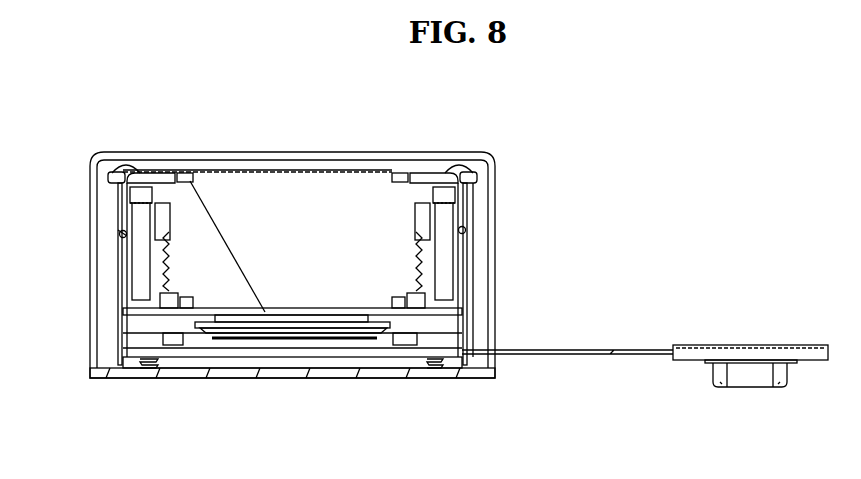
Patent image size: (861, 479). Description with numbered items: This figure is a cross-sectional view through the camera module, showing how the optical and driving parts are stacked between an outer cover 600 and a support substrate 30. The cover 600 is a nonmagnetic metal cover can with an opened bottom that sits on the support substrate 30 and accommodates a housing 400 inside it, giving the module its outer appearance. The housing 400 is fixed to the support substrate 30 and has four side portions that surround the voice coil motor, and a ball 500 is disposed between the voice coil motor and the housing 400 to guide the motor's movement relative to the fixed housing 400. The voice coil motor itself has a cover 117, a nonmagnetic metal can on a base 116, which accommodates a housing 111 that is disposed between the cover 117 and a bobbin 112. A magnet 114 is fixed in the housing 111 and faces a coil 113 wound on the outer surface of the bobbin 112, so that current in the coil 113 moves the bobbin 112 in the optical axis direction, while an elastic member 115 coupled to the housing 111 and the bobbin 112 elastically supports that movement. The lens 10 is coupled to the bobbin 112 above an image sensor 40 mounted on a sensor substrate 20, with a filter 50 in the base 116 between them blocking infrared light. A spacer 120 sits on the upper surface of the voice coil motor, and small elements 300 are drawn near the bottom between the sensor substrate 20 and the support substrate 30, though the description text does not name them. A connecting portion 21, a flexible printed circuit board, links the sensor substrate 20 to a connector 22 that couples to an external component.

The lens 10 is at (285, 237).
The sensor substrate 20 is at (337, 354).
The connecting portion 21 is at (570, 355).
The connector 22 is at (753, 379).
The support substrate 30 is at (288, 374).
The image sensor 40 is at (228, 342).
The filter 50 is at (207, 340).
The housing 111 is at (450, 200).
The bobbin 112 is at (423, 212).
The coil 113 is at (440, 275).
The magnet 114 is at (450, 255).
The elastic member 115 is at (143, 195).
The base 116 is at (470, 330).
The cover 117 is at (127, 268).
The spacer 120 is at (117, 170).
The elastic member 300 is at (140, 364).
The housing 400 is at (478, 298).
The ball 500 is at (120, 233).
The cover 600 is at (94, 177).